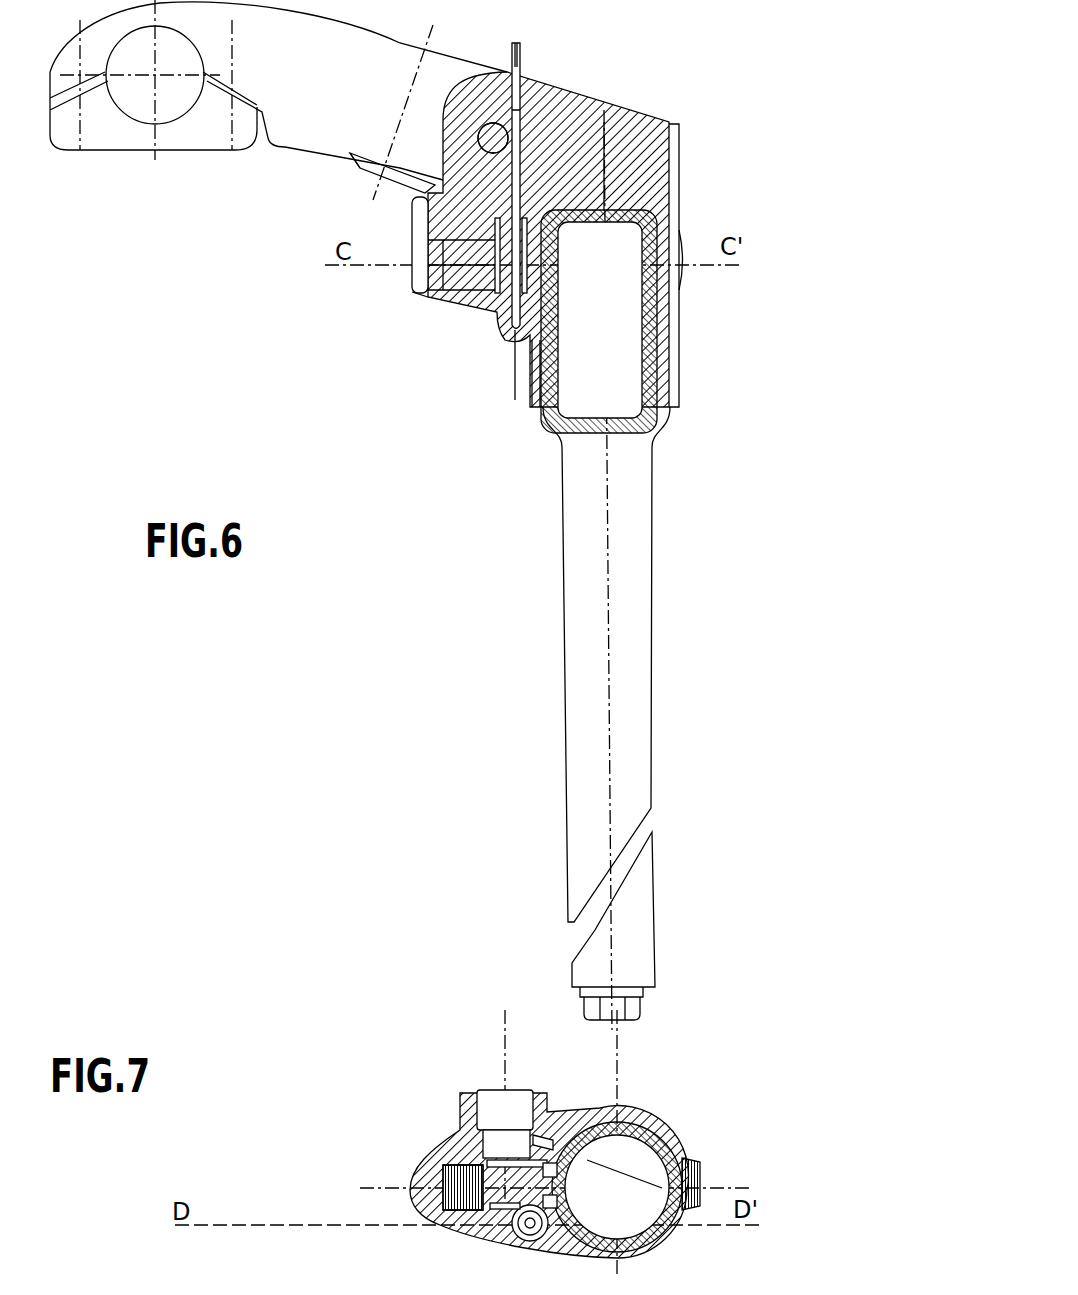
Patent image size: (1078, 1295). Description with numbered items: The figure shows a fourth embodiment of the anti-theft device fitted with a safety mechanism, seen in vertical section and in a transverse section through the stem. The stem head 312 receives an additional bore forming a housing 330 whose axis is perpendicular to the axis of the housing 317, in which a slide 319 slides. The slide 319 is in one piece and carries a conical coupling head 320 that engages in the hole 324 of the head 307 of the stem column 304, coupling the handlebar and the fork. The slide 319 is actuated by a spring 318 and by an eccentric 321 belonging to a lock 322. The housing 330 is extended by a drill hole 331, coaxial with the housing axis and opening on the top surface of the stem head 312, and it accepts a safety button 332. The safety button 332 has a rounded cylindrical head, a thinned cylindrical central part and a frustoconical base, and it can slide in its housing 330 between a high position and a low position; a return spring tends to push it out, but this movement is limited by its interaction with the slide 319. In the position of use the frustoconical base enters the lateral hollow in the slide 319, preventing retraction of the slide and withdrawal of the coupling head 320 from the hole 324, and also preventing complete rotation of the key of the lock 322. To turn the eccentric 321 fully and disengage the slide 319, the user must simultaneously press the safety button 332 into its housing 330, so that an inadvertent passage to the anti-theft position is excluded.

In FIG. 6, the stem column 304 is at (578, 578).
In FIG. 7, the head of the stem column 307 is at (660, 1142).
In FIG. 6, the stem head 312 is at (628, 128).
In FIG. 7, the housing 317 is at (432, 1160).
In FIG. 7, the spring 318 is at (420, 1180).
In FIG. 7, the slide 319 is at (445, 1130).
In FIG. 7, the conical coupling head 320 is at (478, 1112).
In FIG. 7, the eccentric 321 is at (460, 1118).
In FIG. 7, the lock 322 is at (497, 1092).
In FIG. 7, the hole 324 is at (600, 1125).
In FIG. 6, the housing 330 is at (452, 308).
In FIG. 7, the housing 330 is at (473, 1175).
In FIG. 6, the drill hole 331 is at (435, 183).
In FIG. 6, the safety button 332 is at (503, 337).